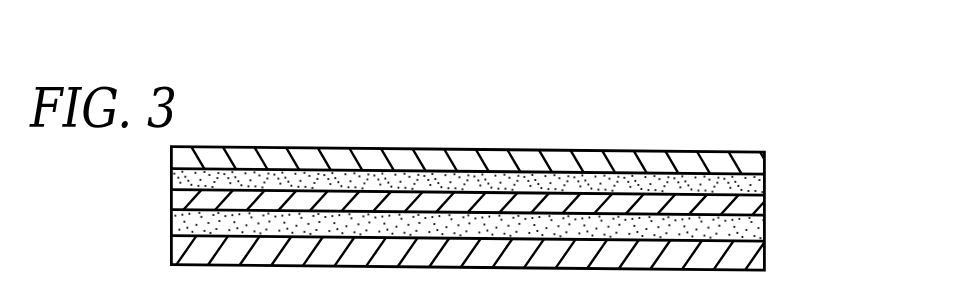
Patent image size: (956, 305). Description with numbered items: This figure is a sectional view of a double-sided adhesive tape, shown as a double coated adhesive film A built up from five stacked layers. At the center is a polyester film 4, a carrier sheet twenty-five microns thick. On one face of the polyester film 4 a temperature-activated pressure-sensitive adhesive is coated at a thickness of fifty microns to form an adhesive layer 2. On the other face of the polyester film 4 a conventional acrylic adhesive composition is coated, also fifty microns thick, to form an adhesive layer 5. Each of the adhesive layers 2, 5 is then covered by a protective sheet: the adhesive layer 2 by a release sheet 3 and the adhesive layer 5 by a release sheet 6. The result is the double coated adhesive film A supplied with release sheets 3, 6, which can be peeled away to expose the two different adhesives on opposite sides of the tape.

The double coated adhesive film A is at (814, 80).
The release sheet 6 is at (742, 152).
The adhesive layer 5 is at (767, 178).
The polyester film 4 is at (767, 202).
The adhesive layer 2 is at (767, 222).
The release sheet 3 is at (767, 255).